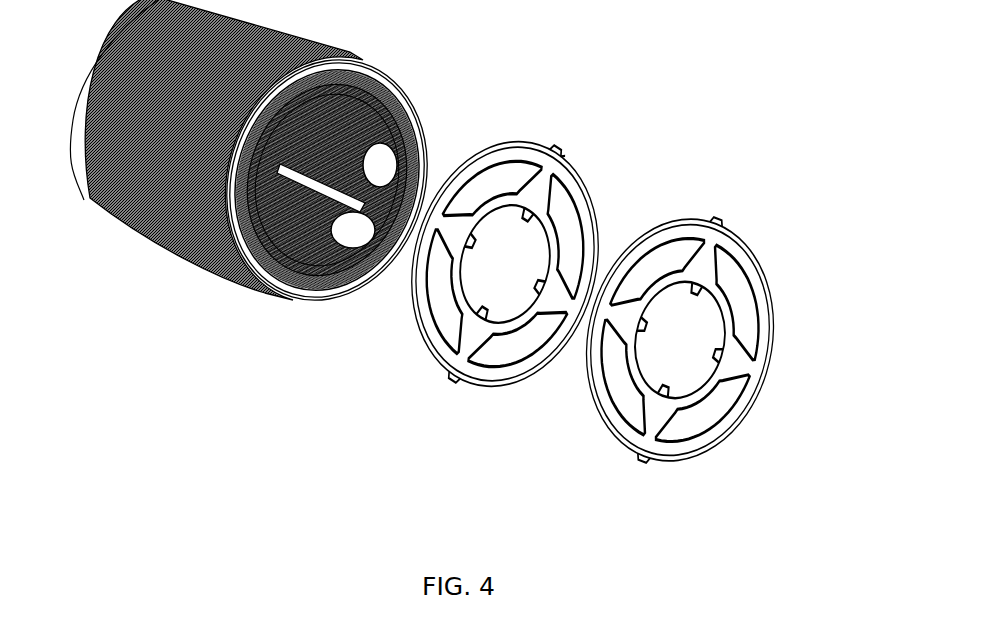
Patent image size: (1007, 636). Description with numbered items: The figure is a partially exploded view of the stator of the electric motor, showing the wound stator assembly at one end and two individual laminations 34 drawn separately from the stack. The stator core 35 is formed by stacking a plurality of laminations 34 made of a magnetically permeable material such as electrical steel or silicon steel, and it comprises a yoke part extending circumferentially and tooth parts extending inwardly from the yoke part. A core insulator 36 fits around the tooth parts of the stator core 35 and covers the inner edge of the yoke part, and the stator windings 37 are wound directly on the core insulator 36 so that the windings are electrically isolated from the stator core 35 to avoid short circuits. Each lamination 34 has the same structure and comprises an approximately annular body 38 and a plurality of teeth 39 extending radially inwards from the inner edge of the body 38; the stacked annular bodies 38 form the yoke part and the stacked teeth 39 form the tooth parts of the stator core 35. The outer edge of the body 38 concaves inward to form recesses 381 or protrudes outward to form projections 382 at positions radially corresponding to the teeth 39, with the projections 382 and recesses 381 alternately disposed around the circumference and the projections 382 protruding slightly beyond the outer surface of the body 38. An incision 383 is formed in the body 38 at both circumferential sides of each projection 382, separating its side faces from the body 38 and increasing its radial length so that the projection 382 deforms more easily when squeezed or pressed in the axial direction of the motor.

The lamination 34 is at (607, 299).
The stator core 35 is at (142, 248).
The core insulator 36 is at (402, 103).
The stator windings 37 is at (423, 133).
The annular body 38 is at (505, 279).
The recess 381 is at (505, 264).
The projection 382 is at (505, 264).
The incision 383 is at (563, 156).
The teeth 39 is at (505, 264).